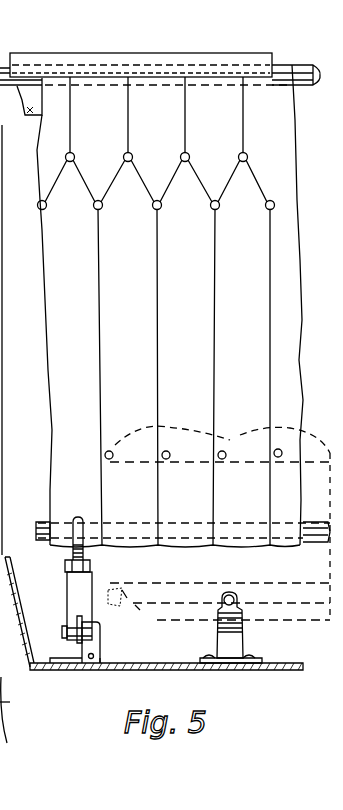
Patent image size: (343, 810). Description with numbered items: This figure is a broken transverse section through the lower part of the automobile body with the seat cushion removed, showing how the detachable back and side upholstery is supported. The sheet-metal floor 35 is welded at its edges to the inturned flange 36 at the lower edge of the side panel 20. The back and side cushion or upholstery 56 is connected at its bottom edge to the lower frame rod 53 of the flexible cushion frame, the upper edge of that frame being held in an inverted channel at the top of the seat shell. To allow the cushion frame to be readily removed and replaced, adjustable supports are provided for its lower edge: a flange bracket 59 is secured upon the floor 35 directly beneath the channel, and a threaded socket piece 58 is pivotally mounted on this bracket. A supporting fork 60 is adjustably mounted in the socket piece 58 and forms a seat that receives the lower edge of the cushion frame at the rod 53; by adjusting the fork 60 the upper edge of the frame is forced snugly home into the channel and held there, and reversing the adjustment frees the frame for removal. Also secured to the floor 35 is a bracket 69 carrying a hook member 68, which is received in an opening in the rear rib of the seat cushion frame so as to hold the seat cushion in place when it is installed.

The side panel 20 is at (19, 434).
The upholstery or cushion 56 is at (262, 278).
The frame rod 53 is at (42, 521).
The supporting fork 60 is at (78, 532).
The threaded socket piece 58 is at (70, 598).
The flange bracket 59 is at (100, 642).
The inturned flange 36 is at (63, 669).
The floor 35 is at (180, 665).
The bracket 69 is at (233, 642).
The hook member 68 is at (231, 596).